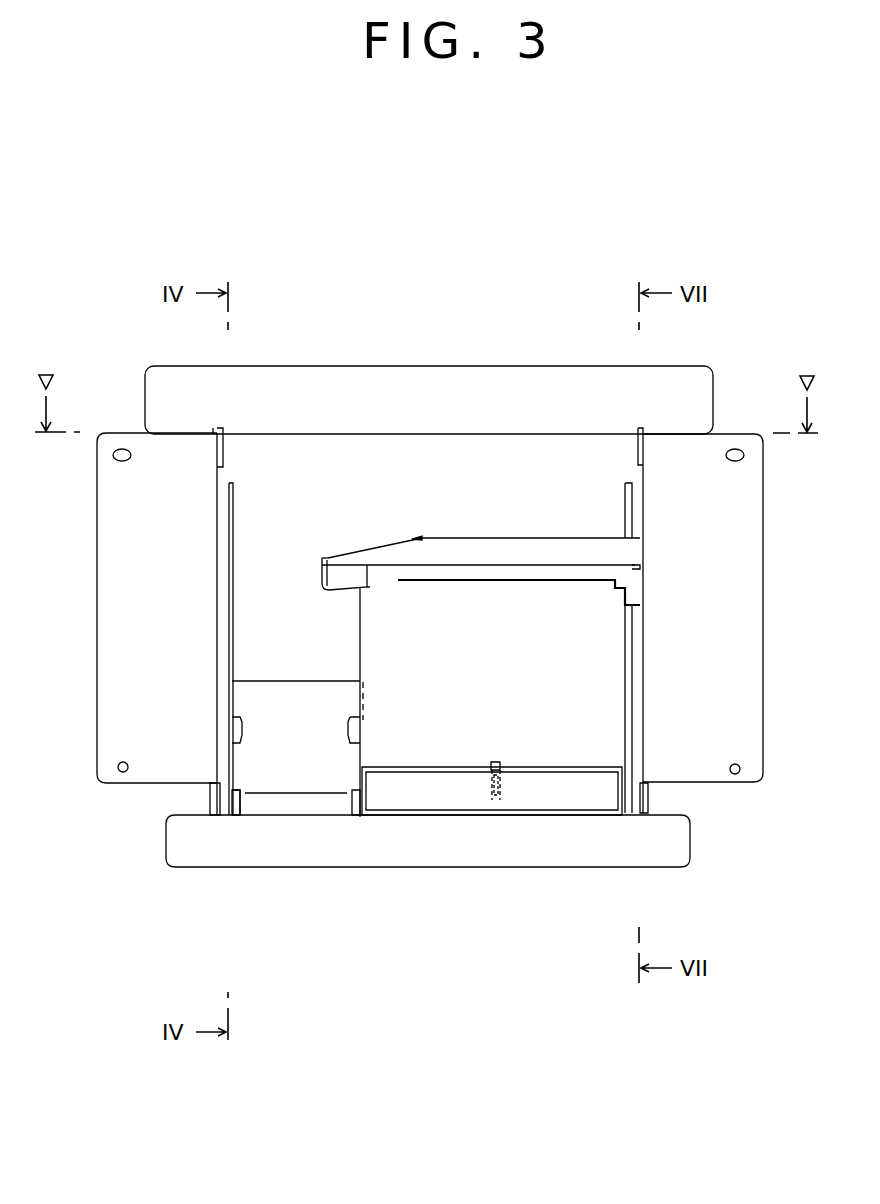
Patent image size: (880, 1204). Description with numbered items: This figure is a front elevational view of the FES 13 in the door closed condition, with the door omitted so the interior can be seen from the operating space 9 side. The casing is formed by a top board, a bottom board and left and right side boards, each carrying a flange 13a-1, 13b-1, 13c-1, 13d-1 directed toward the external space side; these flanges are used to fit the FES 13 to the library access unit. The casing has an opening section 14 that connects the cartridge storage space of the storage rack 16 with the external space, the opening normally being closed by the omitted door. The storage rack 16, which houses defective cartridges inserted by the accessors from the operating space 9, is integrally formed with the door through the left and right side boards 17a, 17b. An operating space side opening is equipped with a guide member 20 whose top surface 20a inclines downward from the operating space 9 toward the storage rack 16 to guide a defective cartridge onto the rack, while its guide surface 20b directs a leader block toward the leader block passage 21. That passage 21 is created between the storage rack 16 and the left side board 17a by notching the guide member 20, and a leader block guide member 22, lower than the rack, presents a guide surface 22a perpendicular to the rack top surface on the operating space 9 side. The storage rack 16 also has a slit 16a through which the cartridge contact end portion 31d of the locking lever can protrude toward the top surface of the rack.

The operating space 9 is at (418, 488).
The FES 13 is at (638, 366).
The flange of top board 13a-1 is at (460, 374).
The flange of bottom board 13b-1 is at (448, 856).
The flange of left side board 13c-1 is at (143, 772).
The flange of right side board 13d-1 is at (750, 770).
The opening section 14 is at (602, 464).
The storage rack 16 is at (570, 722).
The slit 16a is at (505, 760).
The left side board 17a is at (230, 653).
The right side board 17b is at (632, 660).
The guide member 20 is at (492, 556).
The top surface 20a is at (557, 552).
The guide surface 20b is at (332, 558).
The leader block passage 21 is at (305, 619).
The leader block guide member 22 is at (303, 770).
The guide surface 22a is at (260, 775).
The cartridge contact end portion 31d is at (495, 800).